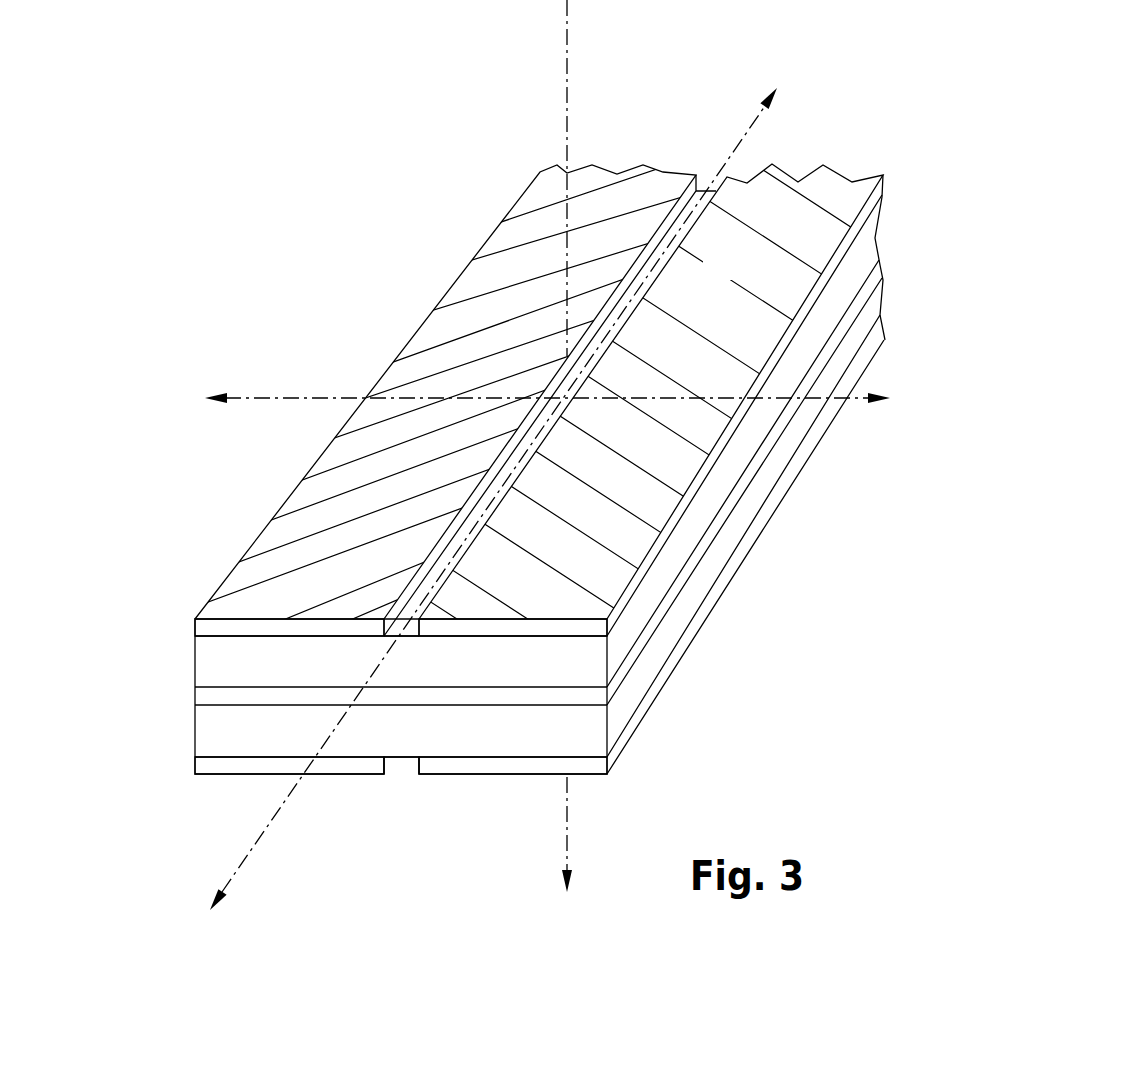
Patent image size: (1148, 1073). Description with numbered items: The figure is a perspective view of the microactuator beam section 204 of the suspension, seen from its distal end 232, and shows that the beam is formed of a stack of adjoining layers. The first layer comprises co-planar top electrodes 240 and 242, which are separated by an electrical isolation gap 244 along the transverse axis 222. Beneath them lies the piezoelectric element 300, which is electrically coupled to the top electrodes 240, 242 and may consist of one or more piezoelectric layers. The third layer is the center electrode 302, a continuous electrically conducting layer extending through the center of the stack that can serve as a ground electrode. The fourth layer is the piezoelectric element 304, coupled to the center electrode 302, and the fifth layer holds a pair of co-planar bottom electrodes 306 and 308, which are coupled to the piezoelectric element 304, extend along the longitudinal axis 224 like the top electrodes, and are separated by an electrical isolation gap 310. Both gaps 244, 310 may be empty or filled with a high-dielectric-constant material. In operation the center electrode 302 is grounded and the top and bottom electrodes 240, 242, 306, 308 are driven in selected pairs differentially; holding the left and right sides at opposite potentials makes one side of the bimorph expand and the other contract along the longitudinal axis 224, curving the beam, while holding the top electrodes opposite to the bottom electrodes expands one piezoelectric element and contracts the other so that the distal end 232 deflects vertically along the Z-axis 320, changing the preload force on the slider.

The microactuator beam section 204 is at (501, 453).
The Z-axis 320 is at (567, 87).
The transverse axis 222 is at (334, 394).
The longitudinal axis 224 is at (733, 152).
The top electrode 242 is at (352, 533).
The top electrode 240 is at (598, 548).
The electrical isolation gap 244 is at (627, 303).
The piezoelectric element 300 is at (195, 663).
The center electrode 302 is at (195, 699).
The piezoelectric element 304 is at (195, 729).
The bottom electrode 308 is at (265, 775).
The electrical isolation gap 310 is at (401, 775).
The bottom electrode 306 is at (582, 777).
The distal end 232 is at (606, 734).